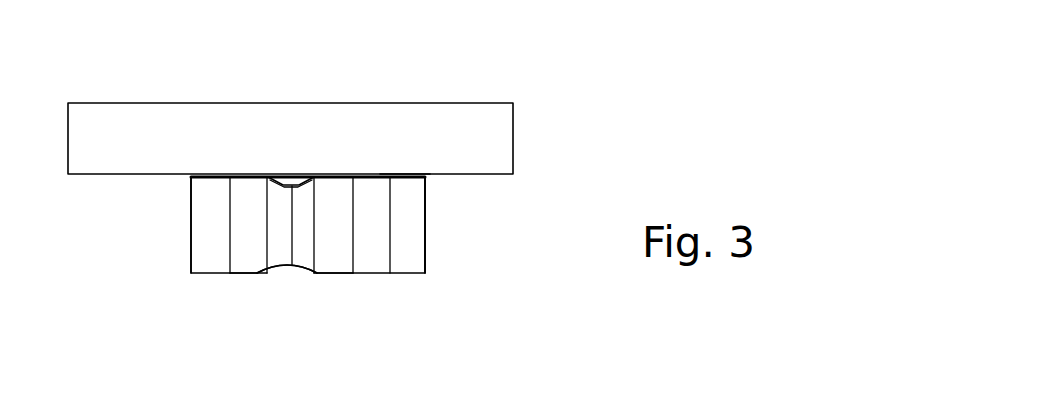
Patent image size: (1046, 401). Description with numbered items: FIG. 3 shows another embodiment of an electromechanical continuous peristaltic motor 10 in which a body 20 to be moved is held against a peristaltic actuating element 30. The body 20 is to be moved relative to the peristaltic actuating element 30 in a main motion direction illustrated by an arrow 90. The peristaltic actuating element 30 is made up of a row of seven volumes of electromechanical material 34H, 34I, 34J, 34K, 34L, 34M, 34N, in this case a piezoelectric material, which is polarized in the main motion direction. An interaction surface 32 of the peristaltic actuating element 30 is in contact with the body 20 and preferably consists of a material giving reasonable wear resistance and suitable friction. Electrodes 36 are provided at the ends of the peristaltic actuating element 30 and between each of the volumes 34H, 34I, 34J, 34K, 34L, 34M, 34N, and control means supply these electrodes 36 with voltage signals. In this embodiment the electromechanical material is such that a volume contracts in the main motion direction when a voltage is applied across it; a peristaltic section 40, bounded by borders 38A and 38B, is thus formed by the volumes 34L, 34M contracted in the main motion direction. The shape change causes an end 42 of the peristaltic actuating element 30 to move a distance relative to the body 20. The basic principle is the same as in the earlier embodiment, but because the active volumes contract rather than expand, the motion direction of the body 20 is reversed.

The assembly 10 is at (545, 96).
The body 20 is at (150, 104).
The interaction surface 32 is at (406, 173).
The peristaltic actuating element 30 is at (455, 245).
The arrow 90 is at (607, 181).
The electrodes 36 is at (390, 195).
The end 42 is at (190, 246).
The volume of electromechanical material 34H is at (200, 229).
The volume of electromechanical material 34I is at (250, 211).
The volume of electromechanical material 34J is at (282, 182).
The volume of electromechanical material 34K is at (300, 181).
The volume of electromechanical material 34L is at (330, 258).
The volume of electromechanical material 34M is at (377, 262).
The volume of electromechanical material 34N is at (406, 258).
The border 38A is at (265, 264).
The border 38B is at (312, 262).
The peristaltic section 40 is at (288, 263).